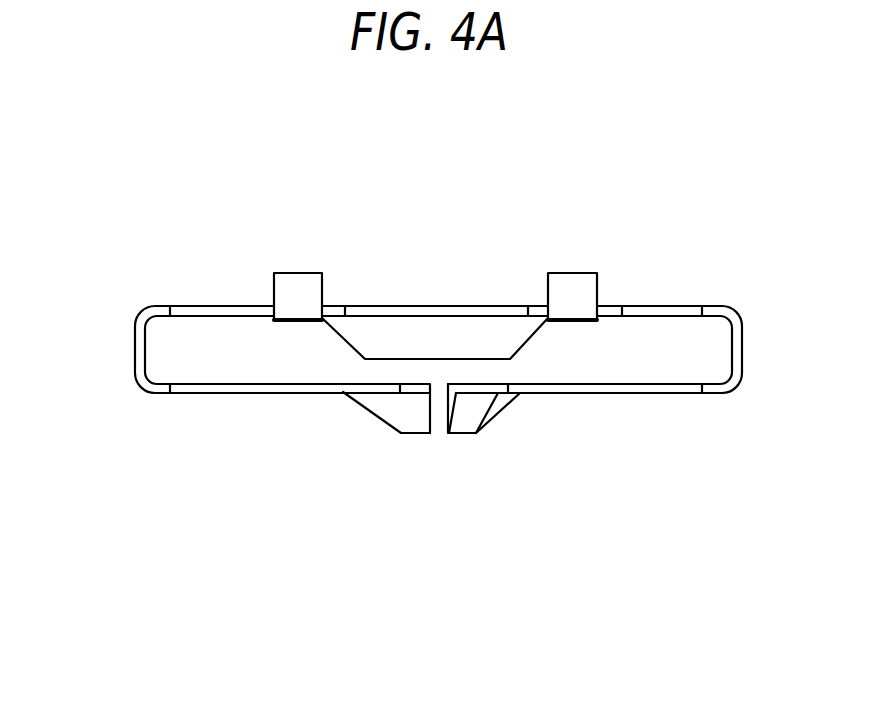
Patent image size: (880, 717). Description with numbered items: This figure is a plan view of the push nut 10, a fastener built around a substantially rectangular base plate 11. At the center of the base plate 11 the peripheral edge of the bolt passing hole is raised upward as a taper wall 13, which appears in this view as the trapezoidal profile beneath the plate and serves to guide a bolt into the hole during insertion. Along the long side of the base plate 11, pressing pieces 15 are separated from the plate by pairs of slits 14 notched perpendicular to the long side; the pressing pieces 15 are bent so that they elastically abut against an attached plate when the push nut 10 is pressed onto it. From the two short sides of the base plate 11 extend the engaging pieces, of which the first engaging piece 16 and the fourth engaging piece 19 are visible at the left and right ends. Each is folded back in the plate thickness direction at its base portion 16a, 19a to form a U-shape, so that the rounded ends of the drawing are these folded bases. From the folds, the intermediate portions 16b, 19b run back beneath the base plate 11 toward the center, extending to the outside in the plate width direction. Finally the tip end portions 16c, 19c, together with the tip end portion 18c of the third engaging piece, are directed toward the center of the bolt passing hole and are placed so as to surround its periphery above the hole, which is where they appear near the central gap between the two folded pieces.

The push nut 10 is at (764, 208).
The base plate 11 is at (383, 305).
The taper wall 13 is at (440, 327).
The slits 14 is at (262, 306).
The pressing pieces 15 is at (288, 283).
The first engaging piece 16 is at (210, 395).
The base portion of first engaging piece 16a is at (133, 360).
The intermediate portion of first engaging piece 16b is at (272, 395).
The tip end portion of first engaging piece 16c is at (405, 420).
The tip end portion of third engaging piece 18c is at (493, 422).
The fourth engaging piece 19 is at (677, 395).
The base portion of fourth engaging piece 19a is at (743, 348).
The intermediate portion of fourth engaging piece 19b is at (613, 395).
The tip end portion of fourth engaging piece 19c is at (467, 422).